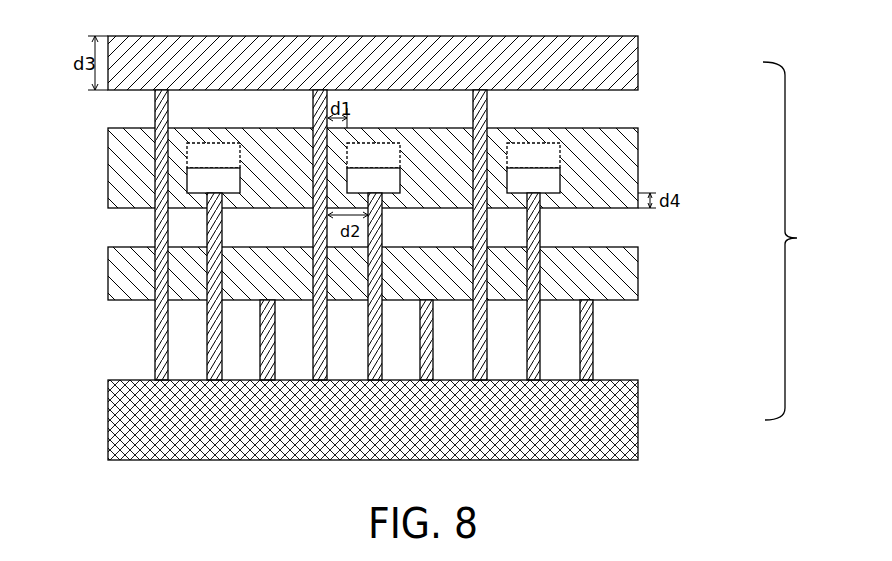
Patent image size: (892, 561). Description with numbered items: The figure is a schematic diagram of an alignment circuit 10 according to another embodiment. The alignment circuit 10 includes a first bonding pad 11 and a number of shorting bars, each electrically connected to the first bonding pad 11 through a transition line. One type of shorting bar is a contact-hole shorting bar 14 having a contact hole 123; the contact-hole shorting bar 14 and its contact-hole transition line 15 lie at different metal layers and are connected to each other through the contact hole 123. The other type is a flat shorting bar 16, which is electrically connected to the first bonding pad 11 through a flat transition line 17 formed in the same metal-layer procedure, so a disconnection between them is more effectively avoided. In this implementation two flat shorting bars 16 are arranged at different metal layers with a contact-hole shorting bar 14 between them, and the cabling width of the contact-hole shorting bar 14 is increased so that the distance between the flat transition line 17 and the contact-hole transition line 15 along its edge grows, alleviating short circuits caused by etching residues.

The alignment circuit 10 is at (796, 241).
The first bonding pad 11 is at (587, 405).
The contact-hole shorting bar 14 is at (622, 128).
The contact-hole transition line 15 is at (210, 205).
The flat shorting bar 16 is at (628, 60).
The flat transition line 17 is at (155, 112).
The contact hole 123 is at (548, 184).